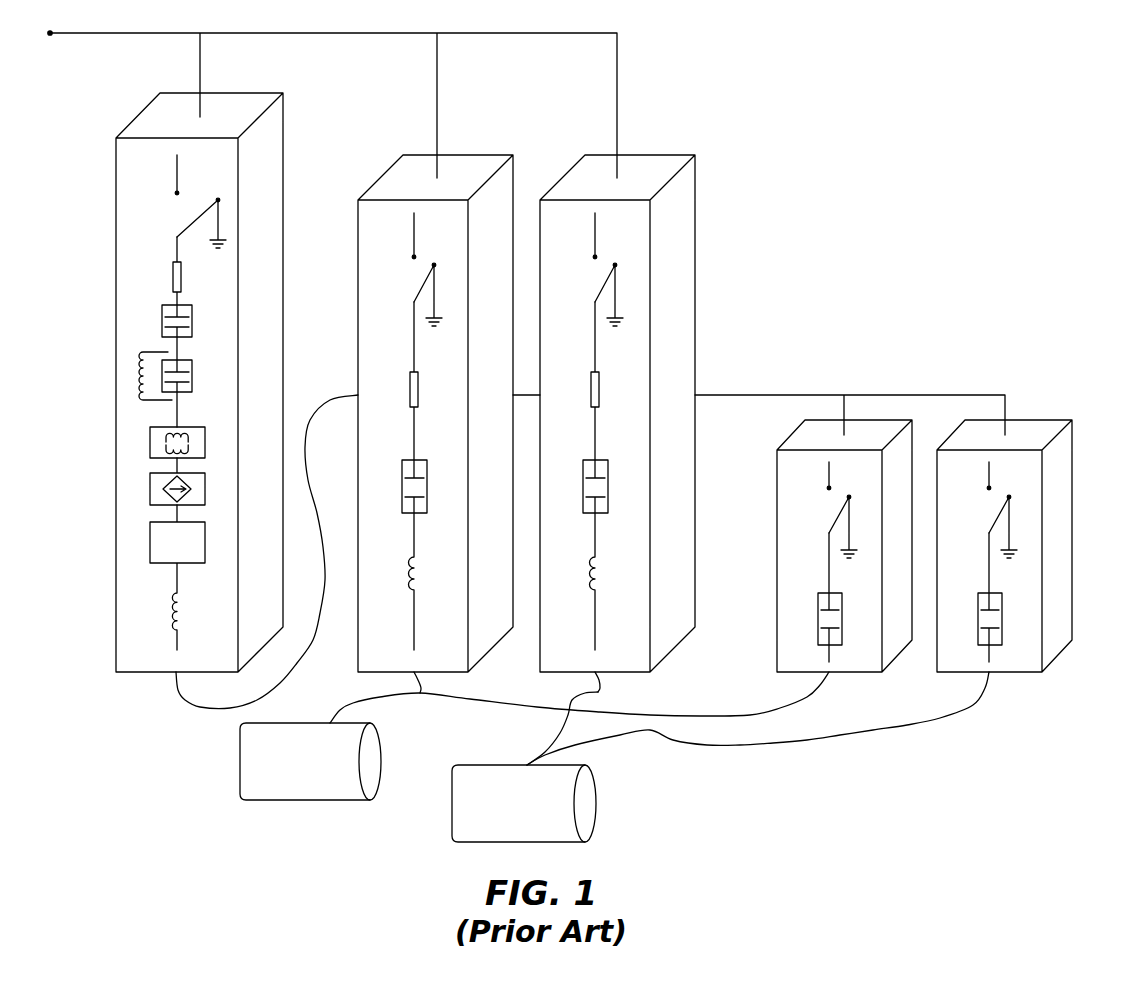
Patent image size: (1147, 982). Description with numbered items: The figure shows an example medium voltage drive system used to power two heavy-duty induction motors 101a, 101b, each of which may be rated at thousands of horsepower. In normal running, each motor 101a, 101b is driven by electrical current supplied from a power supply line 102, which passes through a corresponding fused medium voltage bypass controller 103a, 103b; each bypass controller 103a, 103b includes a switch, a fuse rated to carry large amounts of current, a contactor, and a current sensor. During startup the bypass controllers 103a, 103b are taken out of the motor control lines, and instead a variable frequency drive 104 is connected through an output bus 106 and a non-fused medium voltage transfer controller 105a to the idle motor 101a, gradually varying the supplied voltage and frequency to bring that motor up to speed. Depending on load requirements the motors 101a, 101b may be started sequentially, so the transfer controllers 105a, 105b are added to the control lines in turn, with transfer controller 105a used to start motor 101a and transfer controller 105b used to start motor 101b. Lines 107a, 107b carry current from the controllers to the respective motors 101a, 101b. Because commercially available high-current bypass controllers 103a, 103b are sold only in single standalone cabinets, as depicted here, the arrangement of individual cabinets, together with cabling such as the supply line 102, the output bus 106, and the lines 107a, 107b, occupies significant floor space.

The motor 101a is at (333, 777).
The motor 101b is at (545, 820).
The power supply line 102 is at (95, 36).
The fused medium voltage bypass controller 103a is at (605, 162).
The fused medium voltage bypass controller 103b is at (617, 413).
The variable frequency drive 104 is at (116, 625).
The non-fused medium voltage transfer controller 105a is at (880, 430).
The non-fused medium voltage transfer controller 105b is at (992, 430).
The output bus 106 is at (730, 395).
The line 107a is at (750, 715).
The line 107b is at (910, 724).